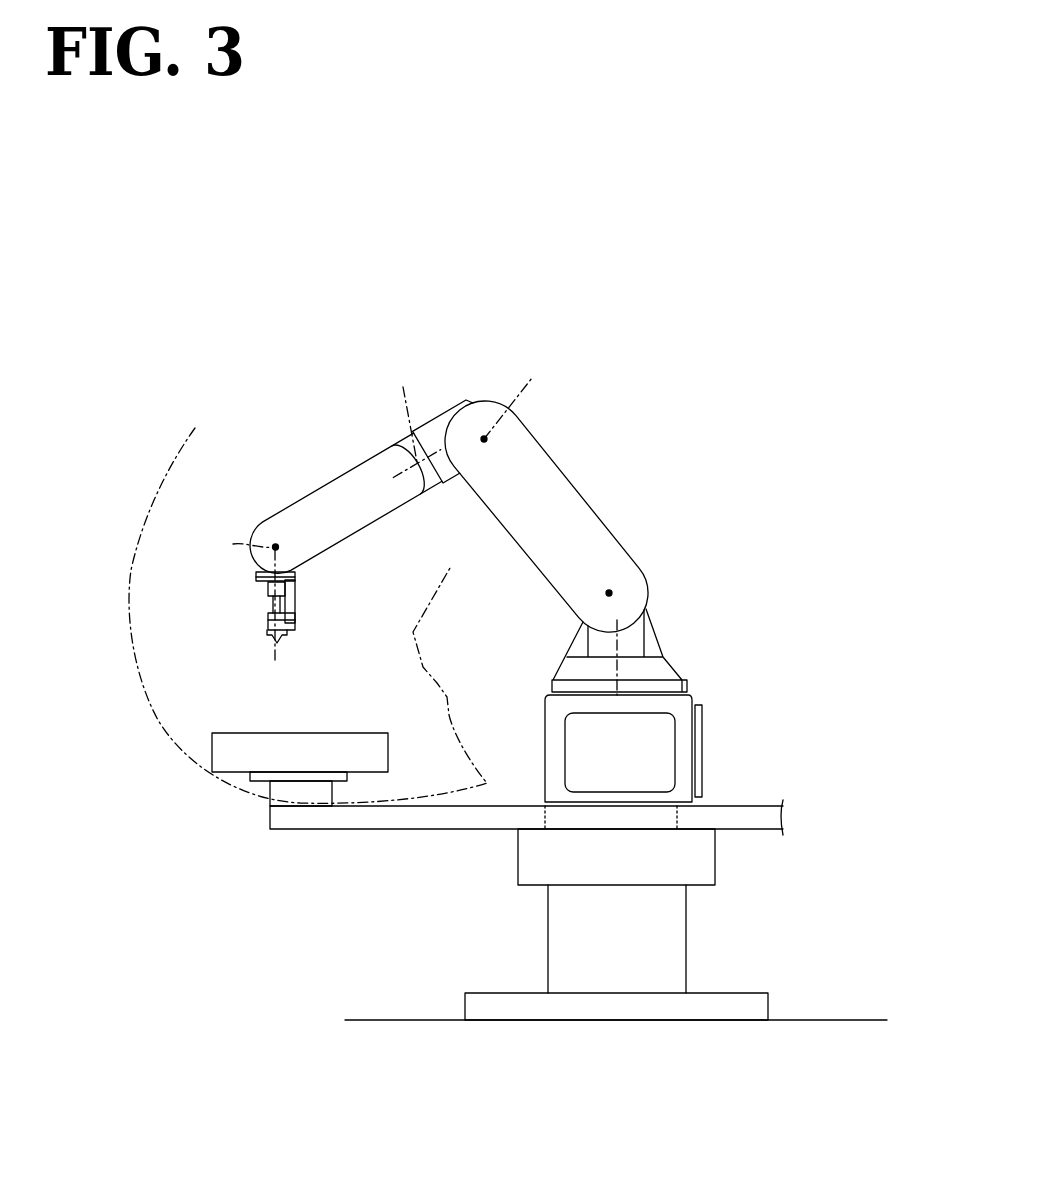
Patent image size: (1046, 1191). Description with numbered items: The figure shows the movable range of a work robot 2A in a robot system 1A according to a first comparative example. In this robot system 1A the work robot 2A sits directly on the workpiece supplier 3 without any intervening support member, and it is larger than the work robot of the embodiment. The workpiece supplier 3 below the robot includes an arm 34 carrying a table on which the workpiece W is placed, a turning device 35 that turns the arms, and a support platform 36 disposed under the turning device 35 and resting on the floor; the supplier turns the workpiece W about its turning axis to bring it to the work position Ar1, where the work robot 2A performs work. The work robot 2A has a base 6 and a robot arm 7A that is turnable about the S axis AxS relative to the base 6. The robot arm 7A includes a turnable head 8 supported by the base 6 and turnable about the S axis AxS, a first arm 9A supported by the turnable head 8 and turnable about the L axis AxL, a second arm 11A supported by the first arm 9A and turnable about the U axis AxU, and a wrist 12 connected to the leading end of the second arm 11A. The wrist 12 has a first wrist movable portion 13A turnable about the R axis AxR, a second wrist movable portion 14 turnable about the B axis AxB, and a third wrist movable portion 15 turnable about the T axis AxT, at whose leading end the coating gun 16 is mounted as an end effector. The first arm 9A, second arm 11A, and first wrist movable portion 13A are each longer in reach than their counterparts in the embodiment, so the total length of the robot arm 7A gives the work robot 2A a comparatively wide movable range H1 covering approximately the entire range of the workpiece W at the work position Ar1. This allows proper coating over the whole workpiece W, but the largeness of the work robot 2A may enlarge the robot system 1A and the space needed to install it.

The robot system 1A is at (215, 308).
The work robot 2A is at (617, 420).
The workpiece supplier 3 is at (388, 878).
The base 6 is at (688, 734).
The robot arm 7A is at (462, 497).
The turnable head 8 is at (668, 672).
The first arm 9A is at (565, 502).
The second arm 11A is at (446, 412).
The wrist 12 is at (275, 452).
The first wrist movable portion 13A is at (332, 496).
The second wrist movable portion 14 is at (293, 571).
The third wrist movable portion 15 is at (286, 587).
The coating gun 16 is at (294, 622).
The arm 34 is at (437, 824).
The turning device 35 is at (710, 852).
The support platform 36 is at (563, 943).
The workpiece W is at (319, 745).
The work position Ar1 is at (243, 720).
The movable range H1 is at (128, 645).
The B axis AxB is at (219, 543).
The T axis AxT is at (270, 650).
The R axis AxR is at (406, 418).
The U axis AxU is at (527, 390).
The L axis AxL is at (609, 593).
The S axis AxS is at (640, 640).